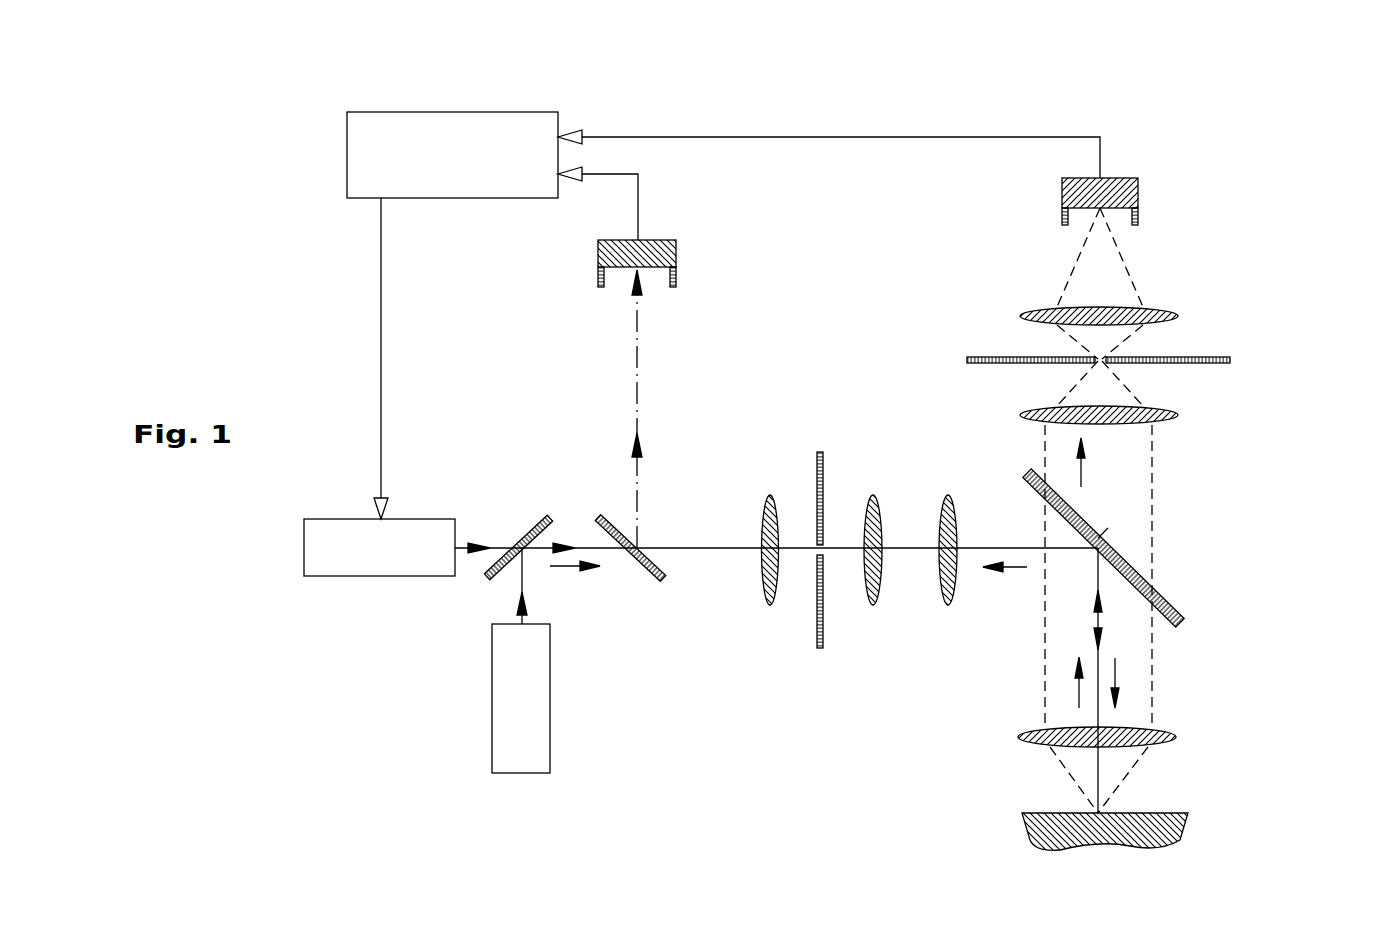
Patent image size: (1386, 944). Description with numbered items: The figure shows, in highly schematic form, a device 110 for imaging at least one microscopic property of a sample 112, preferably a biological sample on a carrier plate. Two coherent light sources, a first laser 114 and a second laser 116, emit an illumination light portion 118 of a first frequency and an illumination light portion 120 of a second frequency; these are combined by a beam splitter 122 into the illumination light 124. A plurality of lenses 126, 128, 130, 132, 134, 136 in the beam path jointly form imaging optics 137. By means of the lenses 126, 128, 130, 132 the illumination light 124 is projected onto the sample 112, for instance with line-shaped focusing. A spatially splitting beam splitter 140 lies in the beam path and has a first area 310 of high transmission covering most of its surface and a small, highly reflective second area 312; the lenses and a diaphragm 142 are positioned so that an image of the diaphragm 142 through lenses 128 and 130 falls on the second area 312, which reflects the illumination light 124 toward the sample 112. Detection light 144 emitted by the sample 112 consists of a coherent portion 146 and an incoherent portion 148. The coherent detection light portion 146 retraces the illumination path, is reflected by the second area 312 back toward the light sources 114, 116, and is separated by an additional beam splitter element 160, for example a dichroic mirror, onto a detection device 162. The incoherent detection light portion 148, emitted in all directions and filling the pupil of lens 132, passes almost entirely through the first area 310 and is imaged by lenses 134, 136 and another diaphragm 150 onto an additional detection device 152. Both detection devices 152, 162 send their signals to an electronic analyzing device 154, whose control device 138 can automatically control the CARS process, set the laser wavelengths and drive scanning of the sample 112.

The device 110 is at (683, 753).
The sample 112 is at (1110, 807).
The first laser 114 is at (358, 562).
The second laser 116 is at (510, 725).
The illumination light portion 118 is at (492, 550).
The illumination light portion 120 is at (520, 585).
The beam splitter 122 is at (523, 540).
The illumination light 124 is at (563, 568).
The lens 126 is at (768, 597).
The lens 128 is at (870, 597).
The lens 130 is at (943, 597).
The lens 132 is at (1160, 738).
The lens 134 is at (1175, 417).
The lens 136 is at (1175, 313).
The imaging optics 137 is at (965, 546).
The control device 138 is at (723, 281).
The spatially splitting beam splitter 140 is at (1158, 548).
The diaphragm 142 is at (817, 633).
The detection light 144 is at (1073, 695).
The coherent detection light portion 146 is at (1018, 577).
The incoherent detection light portion 148 is at (1075, 470).
The diaphragm 150 is at (1217, 357).
The additional detection device 152 is at (1138, 192).
The electronic analyzing device 154 is at (478, 138).
The additional beam splitter element 160 is at (648, 580).
The detection device 162 is at (662, 253).
The first area 310 is at (1162, 593).
The second area 312 is at (1108, 538).